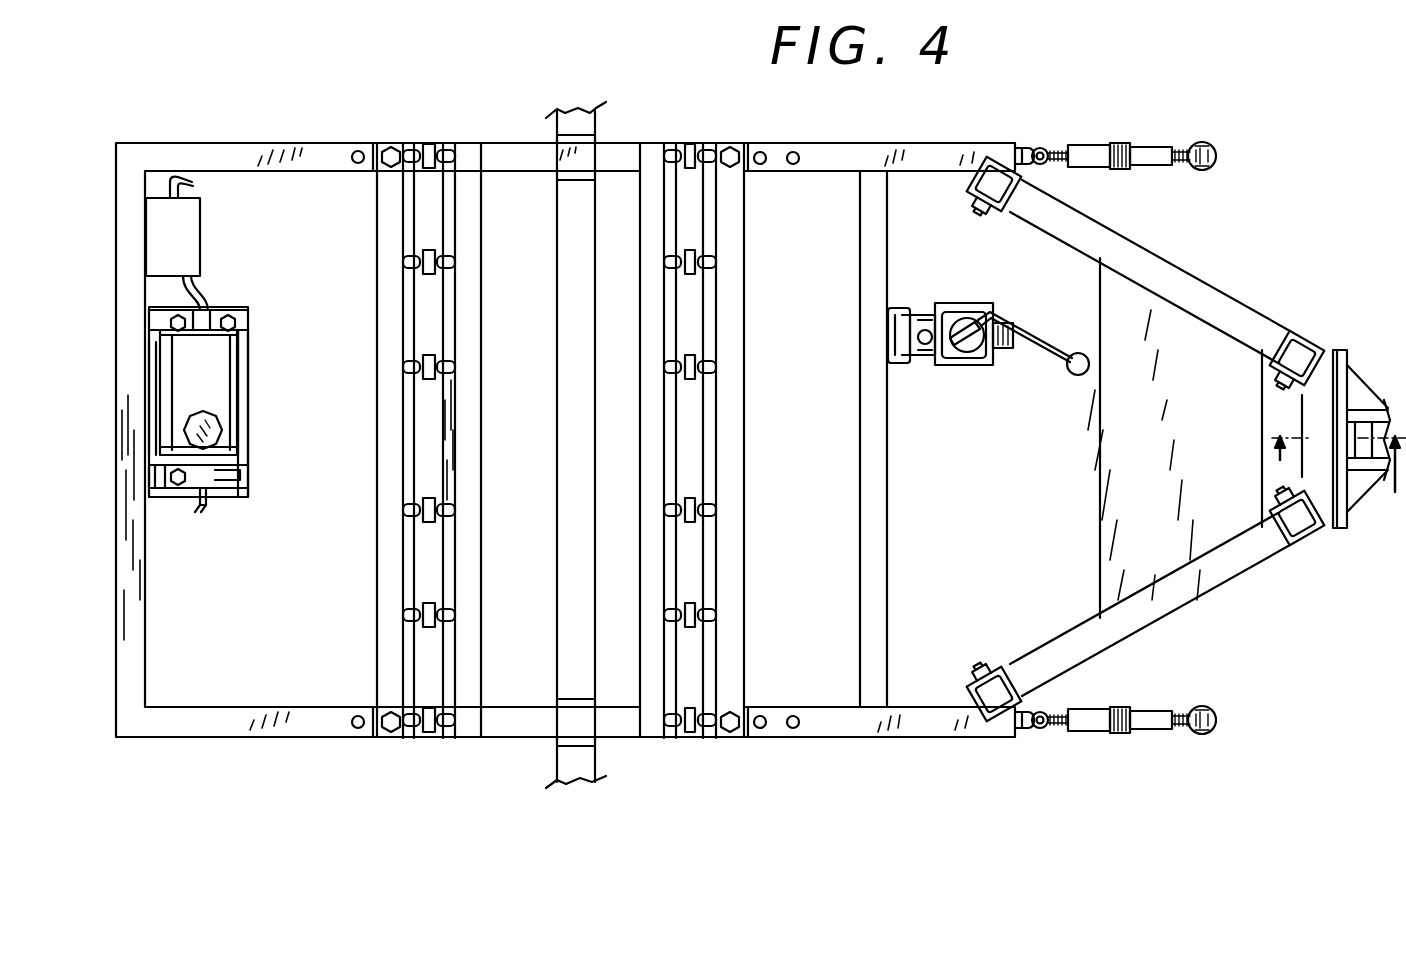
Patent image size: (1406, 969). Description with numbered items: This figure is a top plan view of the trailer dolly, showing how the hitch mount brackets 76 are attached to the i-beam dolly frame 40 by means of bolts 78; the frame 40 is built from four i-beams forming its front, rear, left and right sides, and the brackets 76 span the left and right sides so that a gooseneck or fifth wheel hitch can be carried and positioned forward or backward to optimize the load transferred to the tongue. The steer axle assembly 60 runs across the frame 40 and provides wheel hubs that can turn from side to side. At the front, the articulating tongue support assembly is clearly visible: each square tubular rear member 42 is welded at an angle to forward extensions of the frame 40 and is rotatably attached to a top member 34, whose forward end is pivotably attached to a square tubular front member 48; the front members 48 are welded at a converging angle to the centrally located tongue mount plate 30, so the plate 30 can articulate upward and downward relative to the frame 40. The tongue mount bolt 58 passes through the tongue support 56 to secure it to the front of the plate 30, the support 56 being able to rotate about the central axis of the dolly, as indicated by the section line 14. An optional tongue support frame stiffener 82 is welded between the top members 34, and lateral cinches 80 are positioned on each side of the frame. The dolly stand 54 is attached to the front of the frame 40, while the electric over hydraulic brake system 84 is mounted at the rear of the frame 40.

The section line 14- 14 is at (1319, 488).
The tongue mount plate 30 is at (1337, 350).
The top member 34 is at (1158, 272).
The i-beam dolly frame 40 is at (858, 738).
The rear member 42 is at (1022, 182).
The front member 48 is at (1330, 532).
The dolly stand 54 is at (970, 368).
The tongue support 56 is at (1350, 364).
The tongue mounting bolt 58 is at (1356, 410).
The steer axle assembly 60 is at (563, 404).
The hitch mount bracket 76 is at (438, 148).
The bolt fastener 78 is at (391, 147).
The lateral cinch 80 is at (1147, 148).
The tongue support frame stiffener 82 is at (1238, 327).
The electric over hydraulic brake system 84 is at (246, 377).